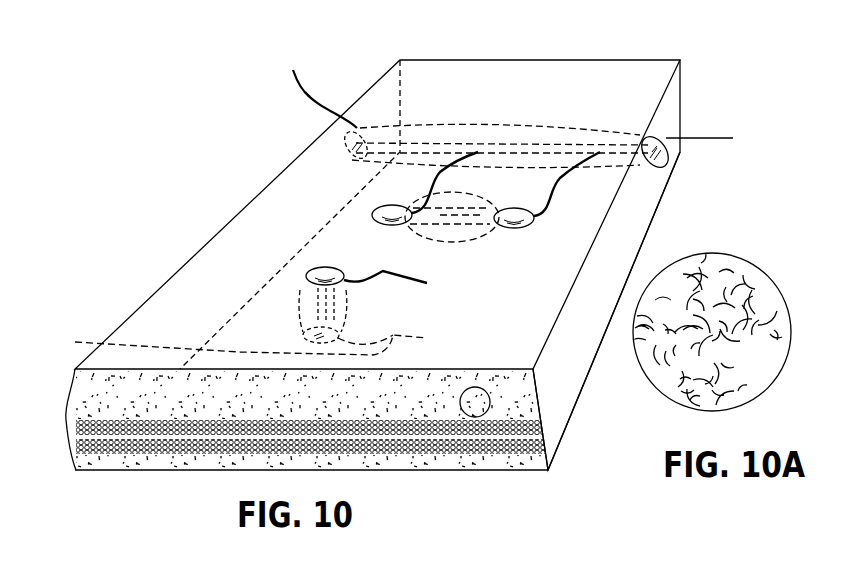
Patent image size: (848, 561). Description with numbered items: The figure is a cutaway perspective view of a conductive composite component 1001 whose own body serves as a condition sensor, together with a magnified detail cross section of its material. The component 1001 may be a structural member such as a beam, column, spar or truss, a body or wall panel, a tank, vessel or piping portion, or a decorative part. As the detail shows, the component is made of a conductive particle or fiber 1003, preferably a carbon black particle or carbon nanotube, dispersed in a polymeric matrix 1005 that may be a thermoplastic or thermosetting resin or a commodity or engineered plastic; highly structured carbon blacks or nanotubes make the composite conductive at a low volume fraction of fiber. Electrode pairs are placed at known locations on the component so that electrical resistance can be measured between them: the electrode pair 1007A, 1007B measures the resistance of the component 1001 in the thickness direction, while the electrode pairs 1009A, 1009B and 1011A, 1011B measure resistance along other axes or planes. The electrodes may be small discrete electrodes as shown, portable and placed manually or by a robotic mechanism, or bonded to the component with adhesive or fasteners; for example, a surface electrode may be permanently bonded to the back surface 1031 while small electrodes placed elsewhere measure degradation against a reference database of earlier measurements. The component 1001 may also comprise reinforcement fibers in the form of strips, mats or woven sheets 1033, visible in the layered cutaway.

In FIG. 10, the conductive composite component 1001 is at (264, 137).
In FIG. 10A, the conductive particle or fiber 1003 is at (733, 303).
In FIG. 10, the polymeric matrix 1005 is at (634, 316).
In FIG. 10A, the polymeric matrix 1005 is at (663, 290).
In FIG. 10, the electrode 1007A is at (383, 271).
In FIG. 10, the electrode 1007B is at (222, 343).
In FIG. 10, the electrode 1009A is at (560, 188).
In FIG. 10, the electrode 1009B is at (400, 176).
In FIG. 10, the electrode 1011A is at (695, 136).
In FIG. 10, the electrode 1011B is at (305, 92).
In FIG. 10, the back surface 1031 is at (568, 415).
In FIG. 10, the woven sheets 1033 is at (418, 430).